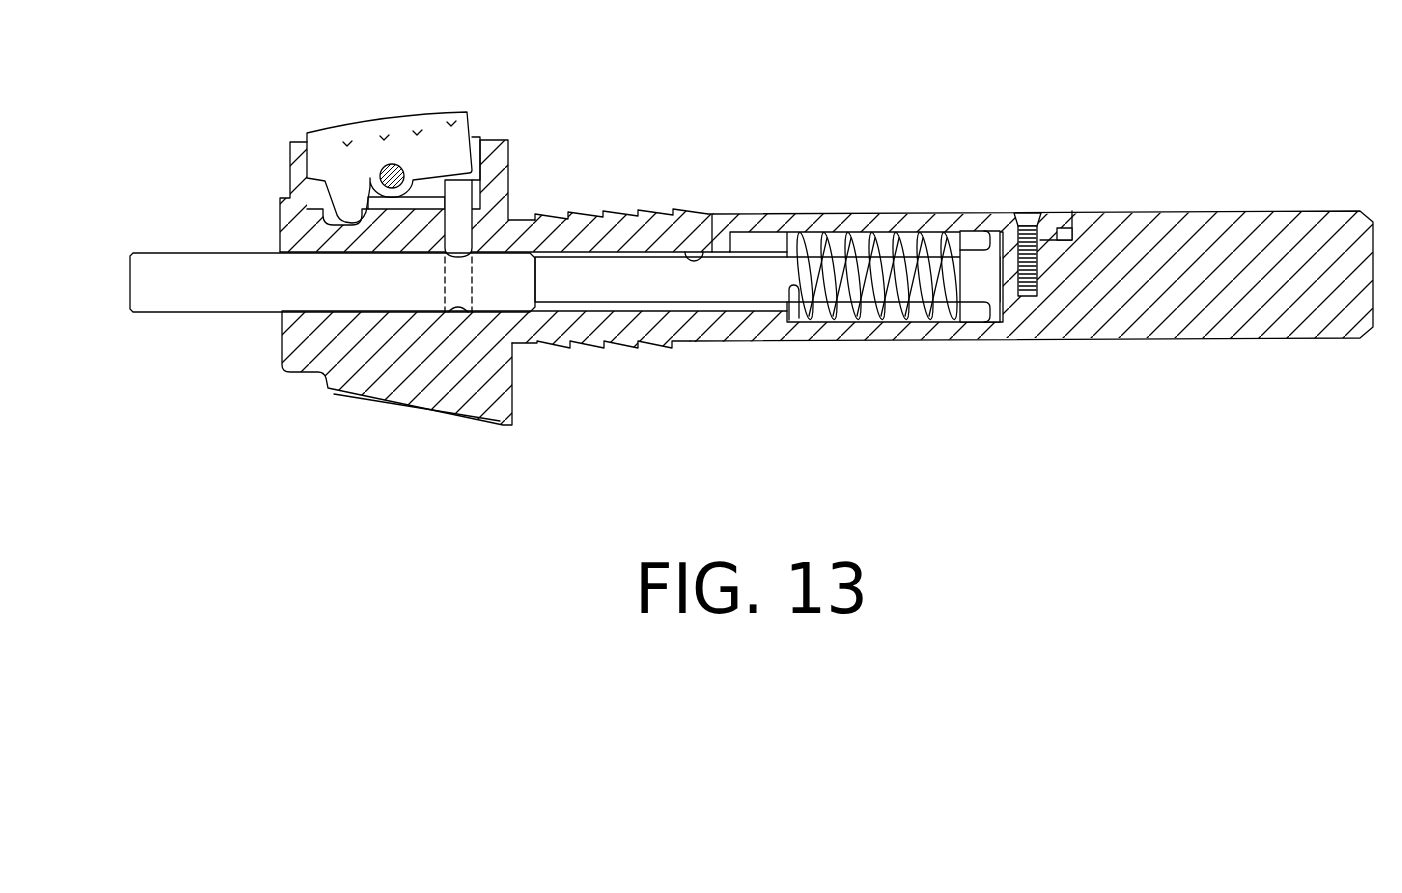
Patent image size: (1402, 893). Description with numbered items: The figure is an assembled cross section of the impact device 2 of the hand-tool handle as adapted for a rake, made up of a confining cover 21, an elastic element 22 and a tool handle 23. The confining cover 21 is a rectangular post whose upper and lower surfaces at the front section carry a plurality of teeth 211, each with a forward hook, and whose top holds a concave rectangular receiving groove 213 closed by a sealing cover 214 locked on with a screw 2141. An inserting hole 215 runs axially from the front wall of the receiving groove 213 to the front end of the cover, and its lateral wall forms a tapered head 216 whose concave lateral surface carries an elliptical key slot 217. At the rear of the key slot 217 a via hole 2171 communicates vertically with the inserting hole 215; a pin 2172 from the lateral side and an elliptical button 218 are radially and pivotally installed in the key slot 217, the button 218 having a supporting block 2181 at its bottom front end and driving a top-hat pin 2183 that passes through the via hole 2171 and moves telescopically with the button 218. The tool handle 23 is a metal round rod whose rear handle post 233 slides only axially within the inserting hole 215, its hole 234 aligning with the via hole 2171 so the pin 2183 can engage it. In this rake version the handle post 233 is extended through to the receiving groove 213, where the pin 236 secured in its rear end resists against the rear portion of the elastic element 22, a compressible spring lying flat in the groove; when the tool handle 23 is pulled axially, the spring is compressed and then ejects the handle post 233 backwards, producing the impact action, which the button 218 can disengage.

The impact device 2 is at (751, 250).
The confining cover 21 is at (1205, 238).
The teeth 211 is at (612, 216).
The receiving groove 213 is at (867, 250).
The sealing cover 214 is at (953, 213).
The screw 2141 is at (1033, 227).
The inserting hole 215 is at (692, 266).
The tapered head 216 is at (360, 358).
The key slot 217 is at (480, 140).
The via hole 2171 is at (473, 235).
The pin 2172 is at (393, 166).
The button 218 is at (328, 147).
The supporting block 2181 is at (350, 213).
The pin with a top hat 2183 is at (482, 187).
The elastic element 22 is at (910, 315).
The tool handle 23 is at (225, 302).
The handle post 233 is at (760, 287).
The hole 234 is at (478, 290).
The pin 236 is at (980, 303).